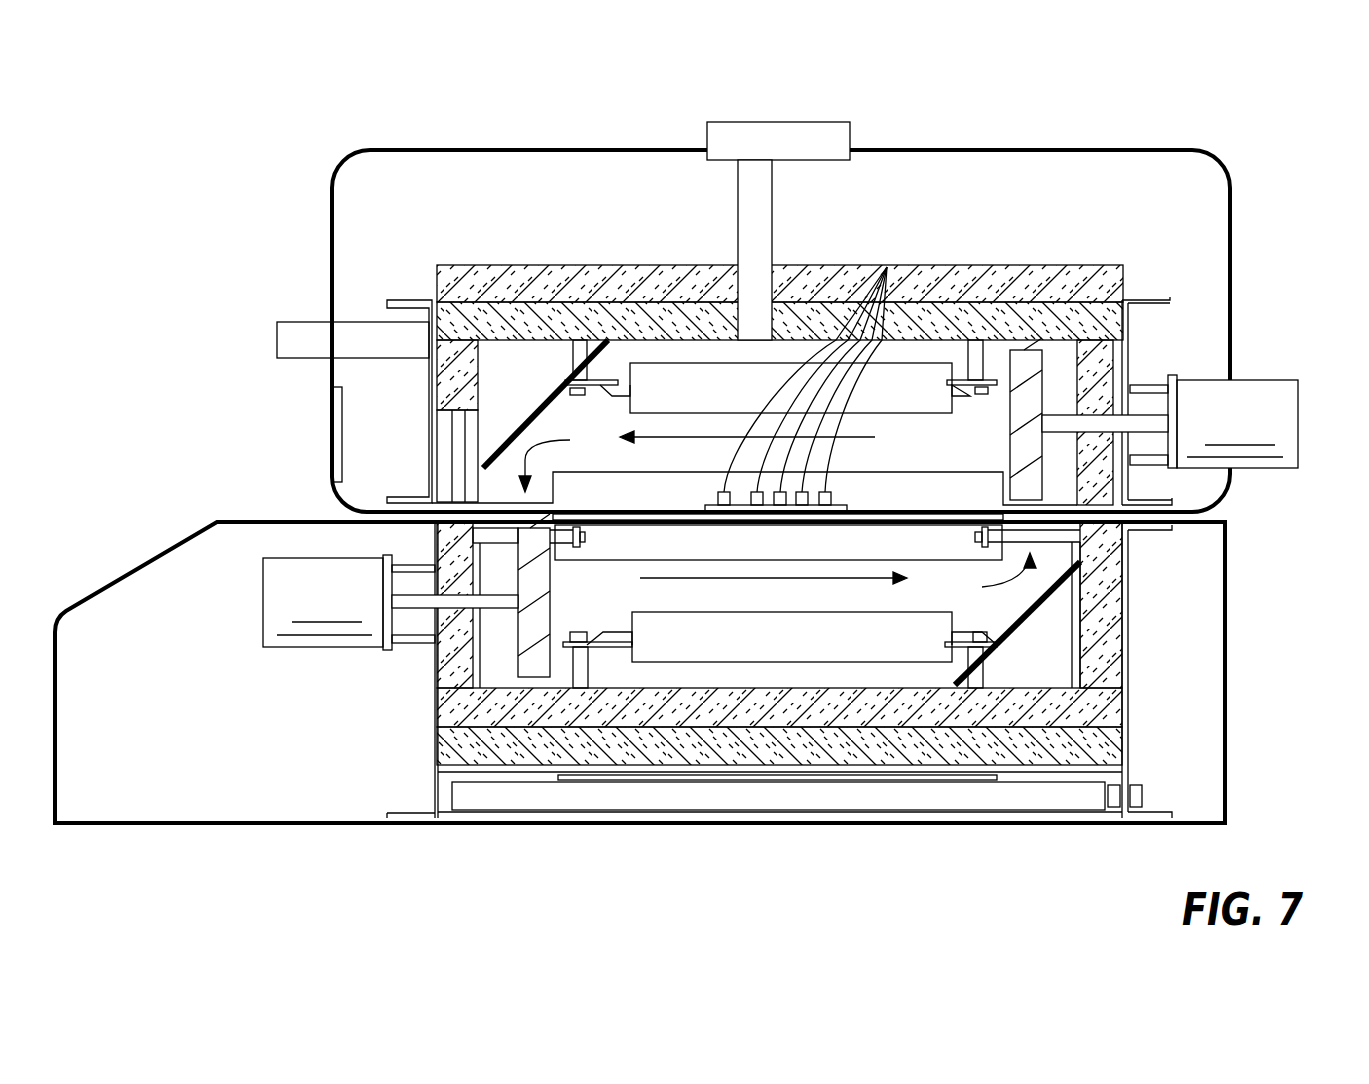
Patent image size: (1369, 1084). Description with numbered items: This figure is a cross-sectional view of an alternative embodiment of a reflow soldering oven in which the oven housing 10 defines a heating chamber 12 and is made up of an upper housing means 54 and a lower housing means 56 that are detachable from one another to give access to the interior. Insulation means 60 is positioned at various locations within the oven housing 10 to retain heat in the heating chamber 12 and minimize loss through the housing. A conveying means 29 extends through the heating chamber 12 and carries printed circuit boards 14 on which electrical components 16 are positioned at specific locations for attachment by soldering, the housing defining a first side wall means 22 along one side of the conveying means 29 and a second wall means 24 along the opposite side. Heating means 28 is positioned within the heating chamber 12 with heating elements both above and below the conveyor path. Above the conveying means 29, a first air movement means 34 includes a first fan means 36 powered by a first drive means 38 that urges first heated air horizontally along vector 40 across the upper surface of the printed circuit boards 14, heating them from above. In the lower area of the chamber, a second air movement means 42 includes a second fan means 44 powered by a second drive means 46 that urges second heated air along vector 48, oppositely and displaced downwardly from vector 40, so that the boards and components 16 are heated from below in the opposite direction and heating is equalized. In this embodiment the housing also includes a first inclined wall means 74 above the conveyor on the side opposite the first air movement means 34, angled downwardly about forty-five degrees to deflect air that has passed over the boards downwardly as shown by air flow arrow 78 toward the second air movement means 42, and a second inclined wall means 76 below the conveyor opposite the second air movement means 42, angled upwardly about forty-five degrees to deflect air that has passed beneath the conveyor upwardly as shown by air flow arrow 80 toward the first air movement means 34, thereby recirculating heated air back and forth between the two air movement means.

The oven housing 10 is at (405, 300).
The heating chamber 12 is at (608, 432).
The printed circuit board 14 is at (707, 510).
The electrical components 16 is at (887, 267).
The first side wall means 22 is at (1127, 570).
The second wall means 24 is at (437, 545).
The heating means 28 is at (920, 372).
The conveying means 29 is at (933, 517).
The first air movement means 34 is at (1090, 515).
The first fan means 36 is at (1028, 367).
The first drive means 38 is at (1272, 388).
The first heated air vector 40 is at (875, 437).
The second air movement means 42 is at (413, 605).
The second fan means 44 is at (545, 662).
The second drive means 46 is at (277, 628).
The second heated air vector 48 is at (697, 578).
The upper housing means 54 is at (1130, 347).
The lower housing means 56 is at (430, 772).
The insulation means 60 is at (518, 283).
The first inclined wall means 74 is at (547, 390).
The second inclined wall means 76 is at (1017, 628).
The air flow arrow 78 is at (513, 440).
The air flow arrow 80 is at (1000, 578).